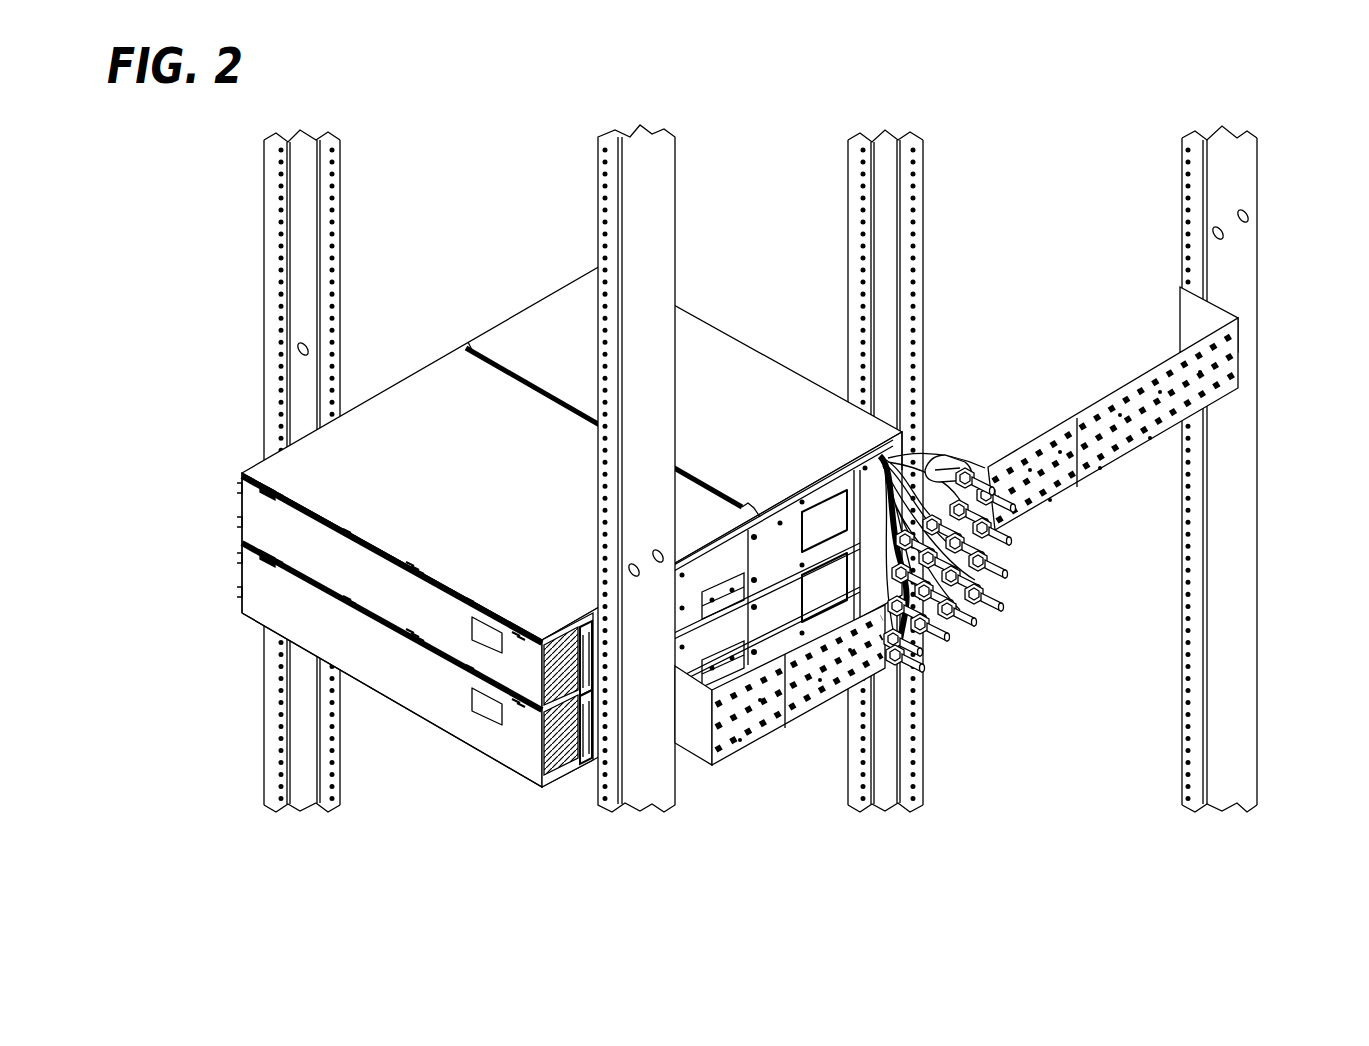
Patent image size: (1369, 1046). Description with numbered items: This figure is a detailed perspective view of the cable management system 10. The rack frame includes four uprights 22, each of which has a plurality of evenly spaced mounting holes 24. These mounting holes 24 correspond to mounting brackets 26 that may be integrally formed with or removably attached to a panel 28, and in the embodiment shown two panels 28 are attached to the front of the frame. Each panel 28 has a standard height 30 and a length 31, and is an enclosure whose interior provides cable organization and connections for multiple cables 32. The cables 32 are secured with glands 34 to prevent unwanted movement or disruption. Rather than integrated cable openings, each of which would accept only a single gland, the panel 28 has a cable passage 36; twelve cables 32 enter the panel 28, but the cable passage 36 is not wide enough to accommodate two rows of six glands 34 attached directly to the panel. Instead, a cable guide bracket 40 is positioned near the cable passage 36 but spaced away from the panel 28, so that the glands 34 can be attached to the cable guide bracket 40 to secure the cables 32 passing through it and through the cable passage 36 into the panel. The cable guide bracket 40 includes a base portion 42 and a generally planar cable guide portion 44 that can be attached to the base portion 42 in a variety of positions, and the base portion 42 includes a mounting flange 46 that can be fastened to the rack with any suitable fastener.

The cable management system 10 is at (152, 208).
The uprights 22 is at (655, 232).
The mounting holes 24 is at (282, 272).
The mounting brackets 26 is at (608, 747).
The panel 28 is at (412, 393).
The height 30 is at (211, 536).
The length 31 is at (230, 381).
The cables 32 is at (937, 453).
The glands 34 is at (992, 487).
The cable passage 36 is at (890, 455).
The cable guide bracket 40 is at (1099, 362).
The base portion 42 is at (1230, 368).
The cable guide portion 44 is at (1042, 497).
The mounting flange 46 is at (1219, 319).